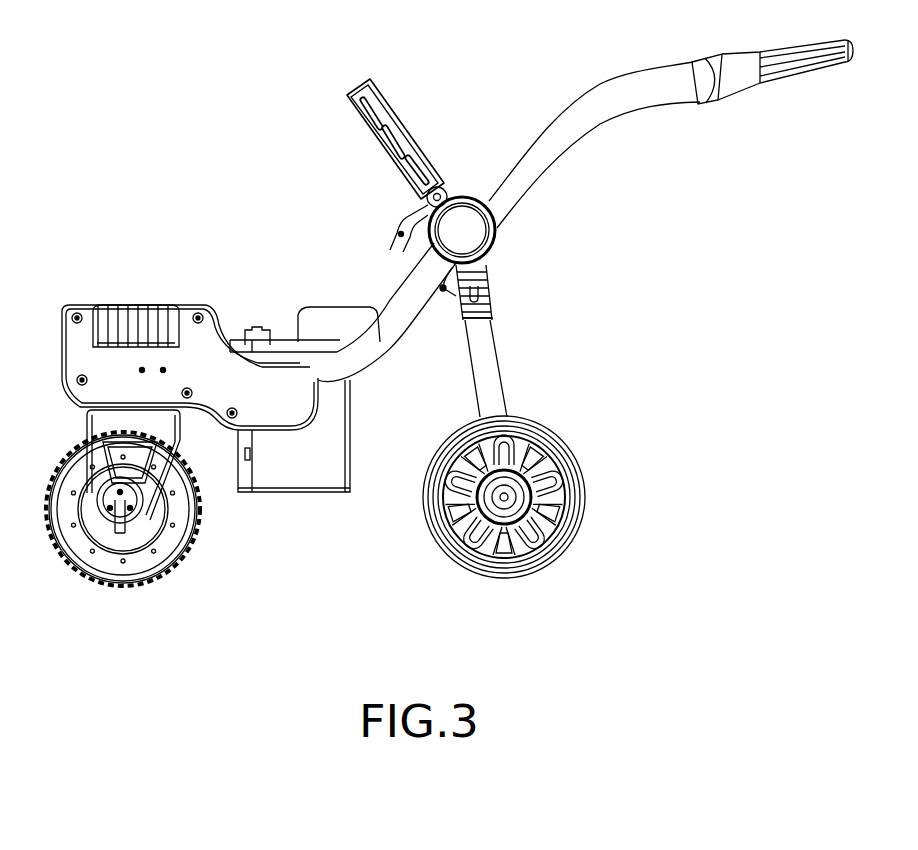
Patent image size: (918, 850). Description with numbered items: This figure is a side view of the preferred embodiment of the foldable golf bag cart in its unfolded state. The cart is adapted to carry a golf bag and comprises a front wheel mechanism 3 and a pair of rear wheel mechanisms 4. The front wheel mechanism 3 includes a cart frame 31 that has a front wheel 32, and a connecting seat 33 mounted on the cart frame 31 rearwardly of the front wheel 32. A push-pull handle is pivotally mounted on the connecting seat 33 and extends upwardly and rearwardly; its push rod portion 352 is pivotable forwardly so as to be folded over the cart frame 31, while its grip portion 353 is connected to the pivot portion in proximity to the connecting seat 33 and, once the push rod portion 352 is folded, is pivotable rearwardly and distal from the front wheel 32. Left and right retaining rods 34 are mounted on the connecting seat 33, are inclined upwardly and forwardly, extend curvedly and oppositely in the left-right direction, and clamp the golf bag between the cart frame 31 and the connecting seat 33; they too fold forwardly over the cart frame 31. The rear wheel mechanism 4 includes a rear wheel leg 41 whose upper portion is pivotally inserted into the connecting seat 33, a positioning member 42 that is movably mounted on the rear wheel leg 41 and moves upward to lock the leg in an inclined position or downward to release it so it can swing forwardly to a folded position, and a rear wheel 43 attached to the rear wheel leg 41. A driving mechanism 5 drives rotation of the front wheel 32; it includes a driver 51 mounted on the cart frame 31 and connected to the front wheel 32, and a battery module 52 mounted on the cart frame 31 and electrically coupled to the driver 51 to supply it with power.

The front wheel mechanism 3 is at (147, 541).
The cart frame 31 is at (377, 330).
The front wheel 32 is at (173, 527).
The connecting seat 33 is at (458, 197).
The retaining rods 34 is at (362, 92).
The push rod portion 352 is at (545, 125).
The grip portion 353 is at (400, 226).
The rear wheel mechanism 4 is at (545, 544).
The rear wheel leg 41 is at (492, 368).
The positioning member 42 is at (485, 304).
The rear wheel 43 is at (575, 508).
The driving mechanism 5 is at (118, 305).
The driver 51 is at (137, 318).
The battery module 52 is at (308, 462).